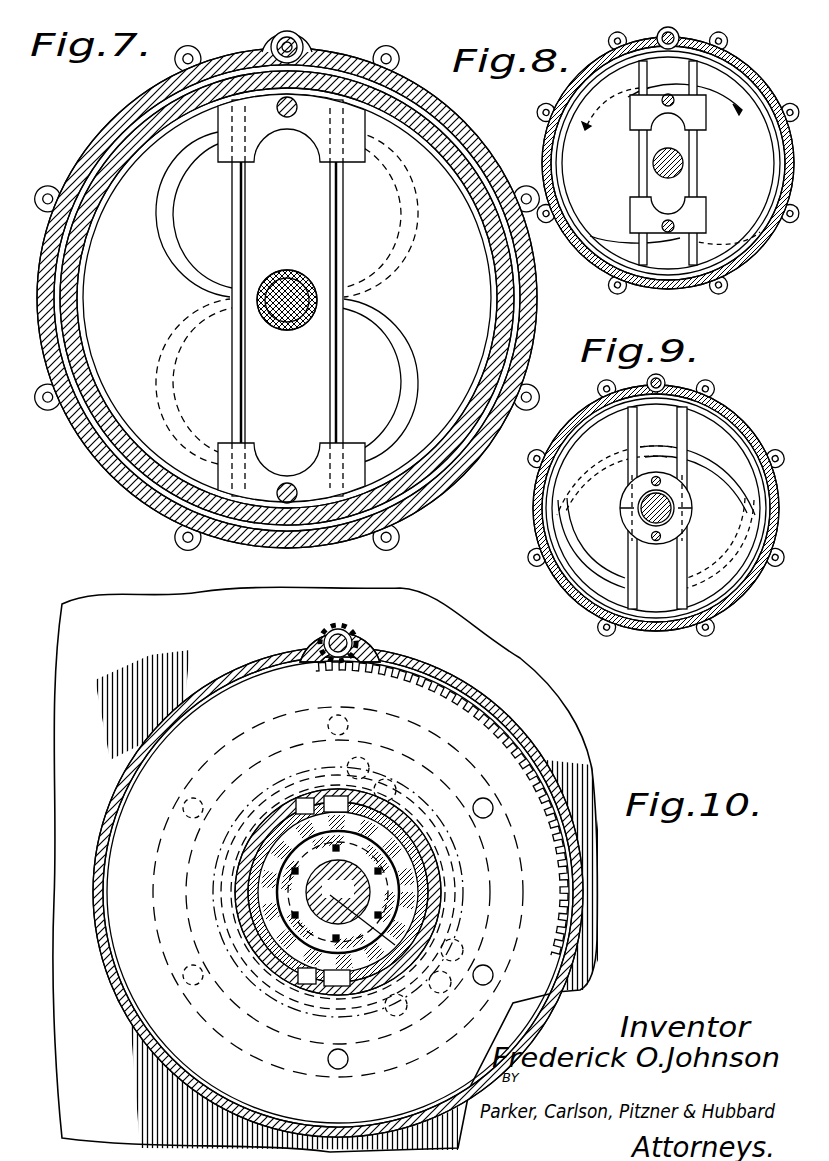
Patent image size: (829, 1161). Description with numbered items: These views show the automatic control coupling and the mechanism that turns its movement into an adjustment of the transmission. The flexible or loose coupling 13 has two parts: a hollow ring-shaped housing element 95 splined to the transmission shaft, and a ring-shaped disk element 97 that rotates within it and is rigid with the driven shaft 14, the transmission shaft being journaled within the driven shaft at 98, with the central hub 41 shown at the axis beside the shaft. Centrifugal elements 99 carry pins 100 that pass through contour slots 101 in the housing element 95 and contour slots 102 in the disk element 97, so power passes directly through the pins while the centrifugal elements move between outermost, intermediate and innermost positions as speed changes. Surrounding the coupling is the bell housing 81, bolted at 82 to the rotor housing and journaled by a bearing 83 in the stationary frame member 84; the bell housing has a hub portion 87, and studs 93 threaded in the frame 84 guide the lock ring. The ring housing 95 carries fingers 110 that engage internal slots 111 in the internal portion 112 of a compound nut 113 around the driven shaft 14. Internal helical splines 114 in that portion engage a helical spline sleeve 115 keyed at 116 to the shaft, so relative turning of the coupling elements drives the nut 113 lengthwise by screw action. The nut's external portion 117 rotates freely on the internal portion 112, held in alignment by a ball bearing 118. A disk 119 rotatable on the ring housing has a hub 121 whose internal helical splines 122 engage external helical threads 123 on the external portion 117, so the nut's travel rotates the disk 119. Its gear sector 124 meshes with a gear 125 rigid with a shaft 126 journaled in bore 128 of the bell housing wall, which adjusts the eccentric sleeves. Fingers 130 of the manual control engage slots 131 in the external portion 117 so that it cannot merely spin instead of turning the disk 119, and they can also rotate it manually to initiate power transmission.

In FIG. 7, the flexible coupling 13 is at (455, 150).
In FIG. 7, the driven shaft 14 is at (290, 330).
In FIG. 8, the driven shaft 14 is at (684, 170).
In FIG. 9, the driven shaft 14 is at (674, 516).
In FIG. 7, the hub 41 is at (298, 272).
In FIG. 7, the bell housing 81 is at (530, 332).
In FIG. 8, the bell housing 81 is at (748, 255).
In FIG. 9, the bell housing 81 is at (728, 418).
In FIG. 10, the bell housing 81 is at (516, 722).
In FIG. 7, the bolts 82 is at (200, 52).
In FIG. 8, the bolts 82 is at (667, 162).
In FIG. 9, the bolts 82 is at (530, 404).
In FIG. 10, the bearing 83 is at (385, 760).
In FIG. 10, the stationary frame member 84 is at (590, 755).
In FIG. 10, the hub portion 87 is at (386, 942).
In FIG. 10, the studs 93 is at (183, 805).
In FIG. 7, the housing element 95 is at (455, 465).
In FIG. 8, the housing element 95 is at (755, 95).
In FIG. 9, the housing element 95 is at (572, 428).
In FIG. 7, the disk element 97 is at (462, 310).
In FIG. 8, the disk element 97 is at (752, 163).
In FIG. 9, the disk element 97 is at (727, 503).
In FIG. 7, the journal 98 is at (275, 275).
In FIG. 7, the centrifugal elements 99 is at (345, 168).
In FIG. 8, the centrifugal elements 99 is at (696, 122).
In FIG. 9, the centrifugal elements 99 is at (625, 508).
In FIG. 7, the pins 100 is at (287, 120).
In FIG. 8, the pins 100 is at (668, 94).
In FIG. 9, the pins 100 is at (656, 476).
In FIG. 7, the contour slots 101 is at (418, 222).
In FIG. 8, the contour slots 101 is at (625, 98).
In FIG. 9, the contour slots 101 is at (655, 517).
In FIG. 7, the contour slots 102 is at (160, 240).
In FIG. 8, the contour slots 102 is at (600, 233).
In FIG. 9, the contour slots 102 is at (590, 545).
In FIG. 10, the fingers 110 is at (430, 852).
In FIG. 10, the internal slots 111 is at (420, 866).
In FIG. 10, the internal portion 112 is at (410, 886).
In FIG. 10, the compound nut 113 is at (412, 828).
In FIG. 10, the internal helical splines 114 is at (398, 912).
In FIG. 10, the helical spline sleeve 115 is at (358, 950).
In FIG. 10, the key 116 is at (338, 892).
In FIG. 10, the external portion 117 is at (390, 930).
In FIG. 10, the ball bearing 118 is at (415, 800).
In FIG. 10, the disk 119 is at (398, 688).
In FIG. 10, the hub 121 is at (395, 945).
In FIG. 10, the internal helical splines 122 is at (306, 982).
In FIG. 10, the external helical threads 123 is at (336, 985).
In FIG. 10, the gear sector 124 is at (508, 752).
In FIG. 10, the gear 125 is at (312, 622).
In FIG. 7, the shaft 126 is at (308, 44).
In FIG. 8, the shaft 126 is at (668, 38).
In FIG. 9, the shaft 126 is at (656, 383).
In FIG. 10, the shaft 126 is at (320, 643).
In FIG. 7, the bore 128 is at (287, 36).
In FIG. 10, the fingers 130 is at (305, 800).
In FIG. 10, the slots 131 is at (336, 798).